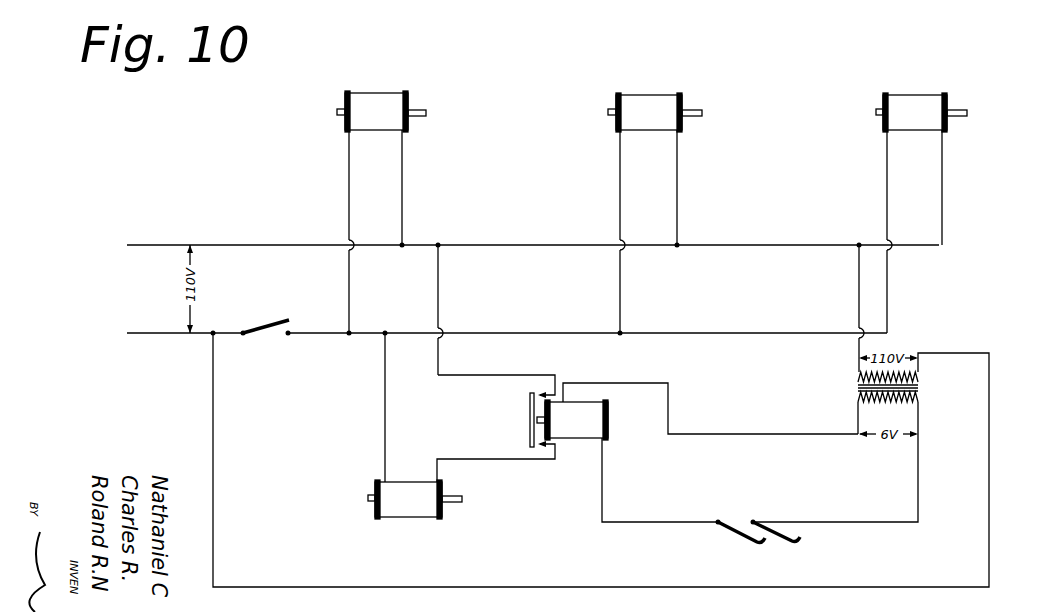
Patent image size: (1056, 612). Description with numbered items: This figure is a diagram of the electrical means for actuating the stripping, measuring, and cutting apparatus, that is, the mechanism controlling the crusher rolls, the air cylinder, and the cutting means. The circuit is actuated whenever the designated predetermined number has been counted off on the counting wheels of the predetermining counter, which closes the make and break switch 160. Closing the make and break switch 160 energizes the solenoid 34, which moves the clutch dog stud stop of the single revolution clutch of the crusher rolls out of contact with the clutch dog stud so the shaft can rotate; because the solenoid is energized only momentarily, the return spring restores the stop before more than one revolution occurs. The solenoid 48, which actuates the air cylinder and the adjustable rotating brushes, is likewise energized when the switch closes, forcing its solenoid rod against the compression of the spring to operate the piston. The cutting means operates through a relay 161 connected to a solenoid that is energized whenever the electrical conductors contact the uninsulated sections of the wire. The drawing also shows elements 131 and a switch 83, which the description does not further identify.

The solenoid 34 is at (382, 96).
The solenoid 48 is at (655, 99).
The motor 131 is at (900, 101).
The make and break switch 160 is at (275, 325).
The relay 161 is at (583, 430).
The foot switch 83 is at (790, 546).